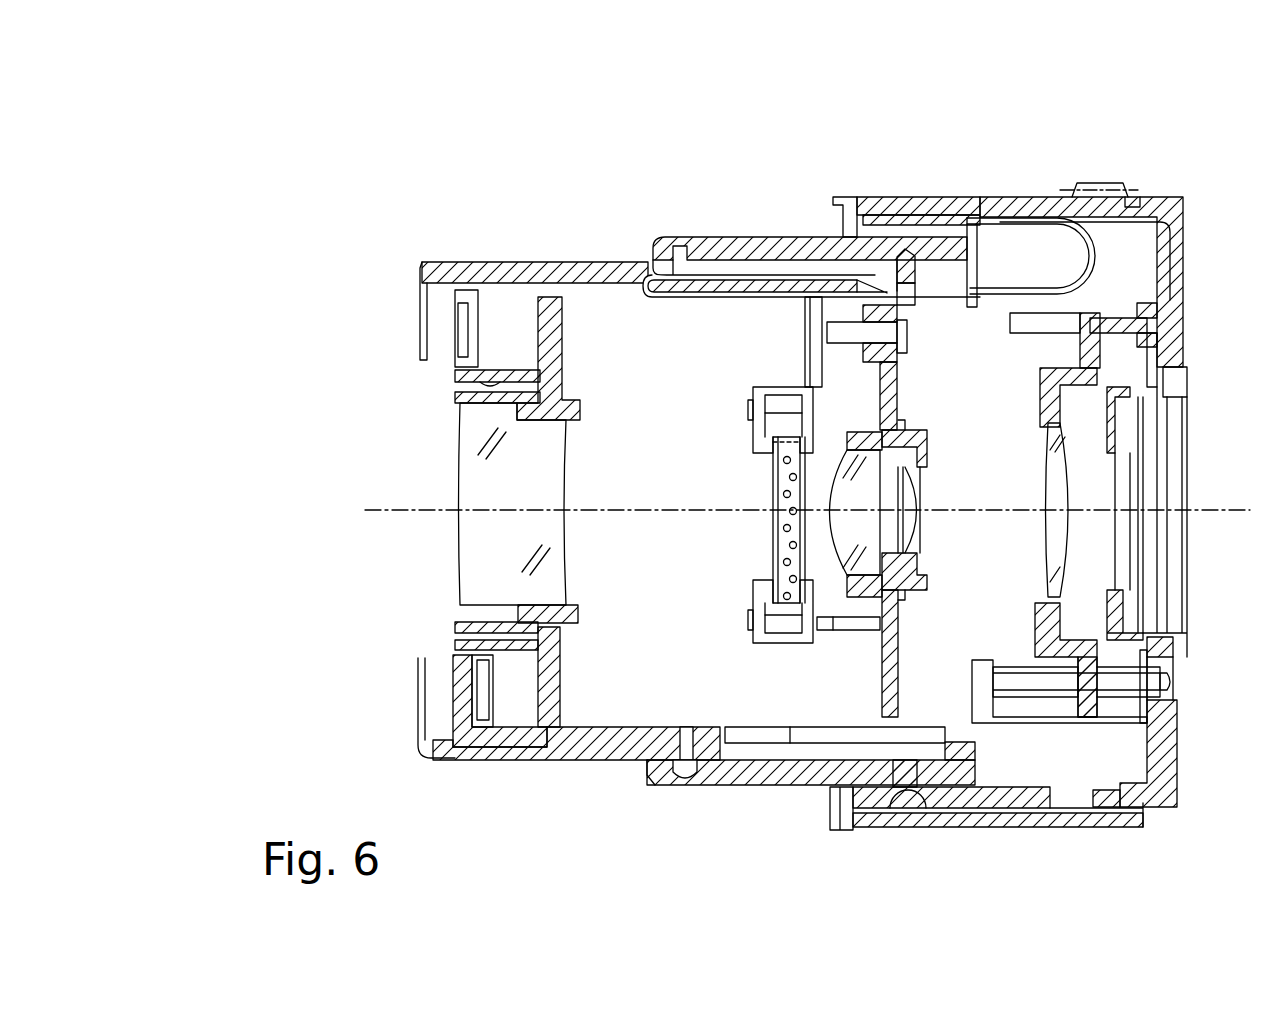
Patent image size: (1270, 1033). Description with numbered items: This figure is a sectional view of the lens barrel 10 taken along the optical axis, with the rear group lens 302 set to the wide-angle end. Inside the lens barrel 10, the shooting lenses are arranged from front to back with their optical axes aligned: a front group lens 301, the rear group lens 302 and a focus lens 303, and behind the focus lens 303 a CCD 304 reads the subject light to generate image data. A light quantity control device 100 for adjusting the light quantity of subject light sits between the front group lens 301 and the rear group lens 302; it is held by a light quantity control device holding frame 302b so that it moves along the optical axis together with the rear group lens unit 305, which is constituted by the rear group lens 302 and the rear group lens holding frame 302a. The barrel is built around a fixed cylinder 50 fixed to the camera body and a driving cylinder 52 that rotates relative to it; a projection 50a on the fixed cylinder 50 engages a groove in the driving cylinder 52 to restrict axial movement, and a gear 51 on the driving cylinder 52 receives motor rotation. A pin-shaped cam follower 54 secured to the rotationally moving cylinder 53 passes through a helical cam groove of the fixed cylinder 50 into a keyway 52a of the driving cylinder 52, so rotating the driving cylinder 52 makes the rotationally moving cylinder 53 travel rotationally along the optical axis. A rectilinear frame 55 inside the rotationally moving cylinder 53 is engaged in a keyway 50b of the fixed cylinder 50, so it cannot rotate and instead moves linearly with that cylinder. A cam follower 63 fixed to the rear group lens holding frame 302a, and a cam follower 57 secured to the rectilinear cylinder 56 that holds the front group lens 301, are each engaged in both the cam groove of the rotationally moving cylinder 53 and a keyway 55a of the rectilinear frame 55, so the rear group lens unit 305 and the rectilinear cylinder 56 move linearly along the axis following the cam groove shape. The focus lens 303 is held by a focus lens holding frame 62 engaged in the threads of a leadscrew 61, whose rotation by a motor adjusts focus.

The lens barrel 10 is at (1195, 122).
The fixed cylinder 50 is at (1170, 212).
The projection 50a is at (1137, 200).
The keyway 50b is at (1072, 246).
The gear 51 is at (1094, 183).
The driving cylinder 52 is at (878, 197).
The keyway 52a is at (1073, 800).
The rotationally moving cylinder 53 is at (741, 240).
The cam follower 54 is at (906, 800).
The rectilinear frame 55 is at (714, 300).
The keyway 55a is at (805, 286).
The rectilinear cylinder 56 is at (536, 266).
The cam follower 57 is at (665, 770).
The leadscrew 61 is at (1125, 680).
The focus lens holding frame 62 is at (1185, 654).
The cam follower 63 is at (682, 252).
The light quantity control device 100 is at (733, 468).
The front group lens 301 is at (486, 494).
The rear group lens 302 is at (865, 542).
The rear group lens holding frame 302a is at (905, 432).
The light quantity control device holding frame 302b is at (822, 412).
The focus lens 303 is at (1050, 478).
The CCD 304 is at (1155, 452).
The rear group lens unit 305 is at (952, 582).